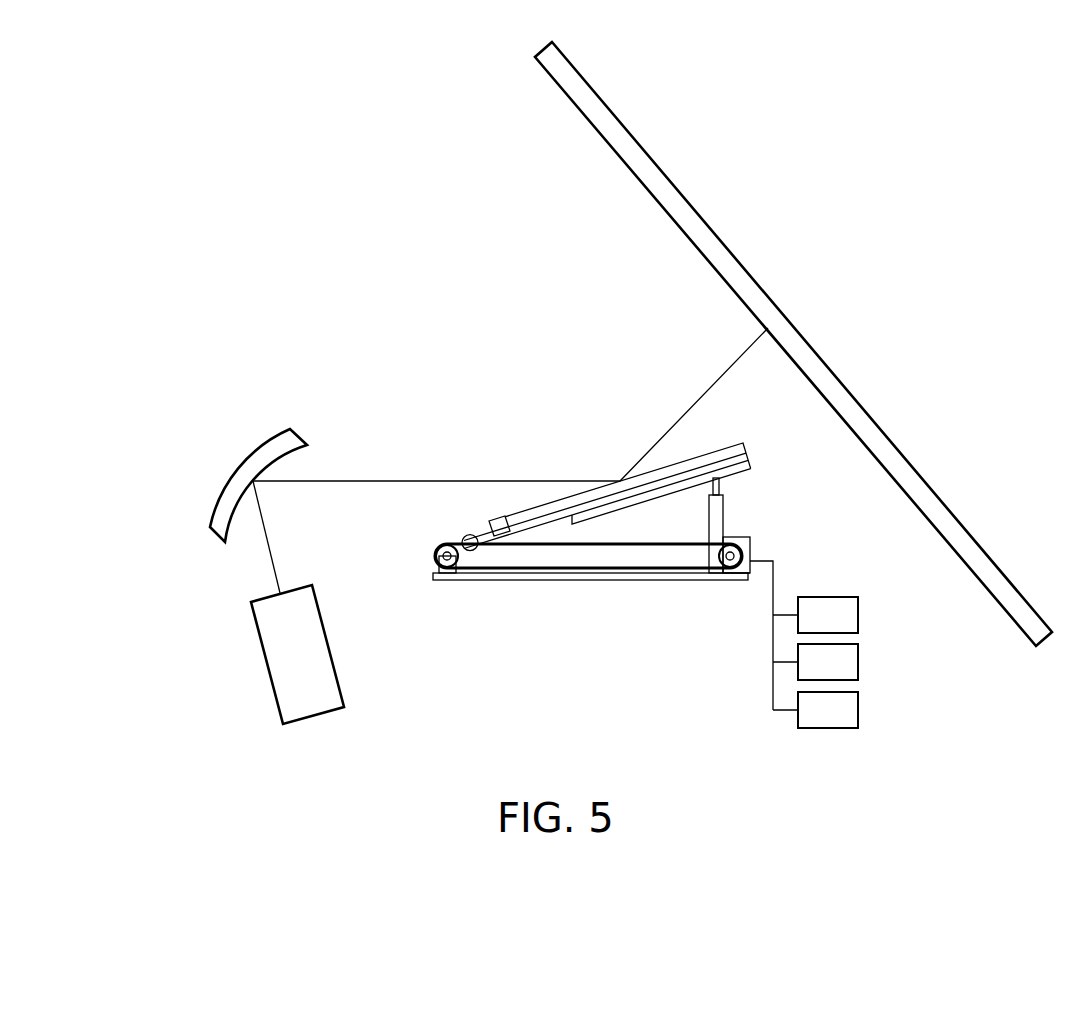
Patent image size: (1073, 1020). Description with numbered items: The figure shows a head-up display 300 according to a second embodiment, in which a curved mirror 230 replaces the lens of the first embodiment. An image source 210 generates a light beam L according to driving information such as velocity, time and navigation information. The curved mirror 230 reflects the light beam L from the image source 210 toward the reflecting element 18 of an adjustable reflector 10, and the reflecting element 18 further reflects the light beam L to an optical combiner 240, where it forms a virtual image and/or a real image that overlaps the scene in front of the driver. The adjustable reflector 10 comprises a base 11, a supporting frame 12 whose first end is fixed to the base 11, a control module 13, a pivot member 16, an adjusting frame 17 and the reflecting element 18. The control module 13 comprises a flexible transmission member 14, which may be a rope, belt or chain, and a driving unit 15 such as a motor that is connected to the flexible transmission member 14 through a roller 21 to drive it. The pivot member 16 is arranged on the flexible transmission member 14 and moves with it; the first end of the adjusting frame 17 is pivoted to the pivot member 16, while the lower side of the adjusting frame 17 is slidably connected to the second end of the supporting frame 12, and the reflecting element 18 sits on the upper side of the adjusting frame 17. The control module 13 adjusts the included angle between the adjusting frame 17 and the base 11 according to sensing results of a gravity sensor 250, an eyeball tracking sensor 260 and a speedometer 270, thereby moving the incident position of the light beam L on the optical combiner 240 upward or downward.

The head-up display 300 is at (208, 145).
The light beam L is at (296, 546).
The curved mirror 230 is at (219, 539).
The image source 210 is at (308, 713).
The optical combiner 240 is at (976, 585).
The gravity sensor 250 is at (828, 615).
The eyeball tracking sensor 260 is at (828, 662).
The speedometer 270 is at (828, 710).
The adjustable reflector 10 is at (527, 648).
The base 11 is at (585, 580).
The supporting frame 12 is at (717, 574).
The control module 13 is at (778, 519).
The flexible transmission member 14 is at (632, 569).
The driving unit 15 is at (750, 548).
The pivot member 16 is at (474, 552).
The adjusting frame 17 is at (491, 521).
The reflecting element 18 is at (743, 449).
The roller 21 is at (738, 578).